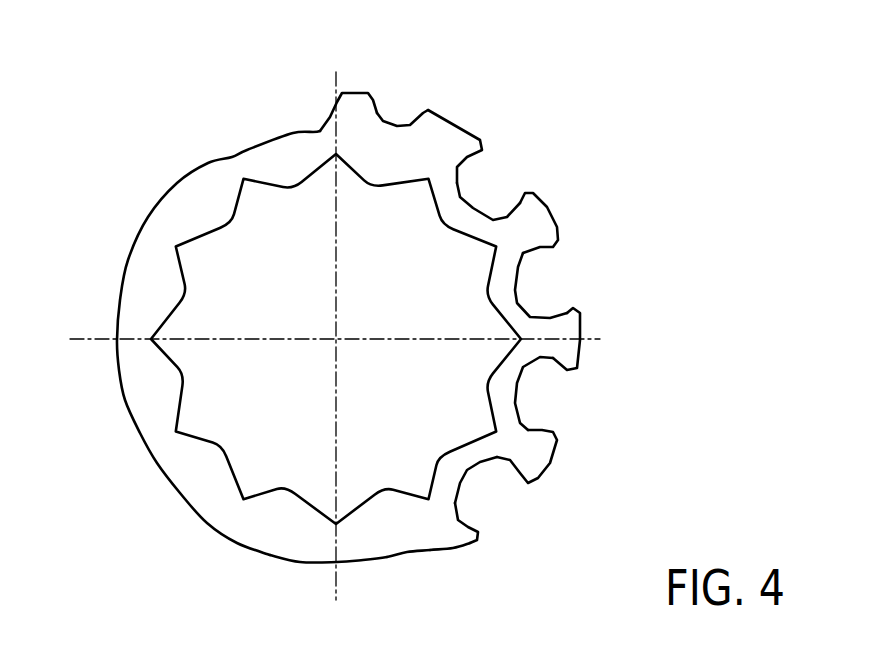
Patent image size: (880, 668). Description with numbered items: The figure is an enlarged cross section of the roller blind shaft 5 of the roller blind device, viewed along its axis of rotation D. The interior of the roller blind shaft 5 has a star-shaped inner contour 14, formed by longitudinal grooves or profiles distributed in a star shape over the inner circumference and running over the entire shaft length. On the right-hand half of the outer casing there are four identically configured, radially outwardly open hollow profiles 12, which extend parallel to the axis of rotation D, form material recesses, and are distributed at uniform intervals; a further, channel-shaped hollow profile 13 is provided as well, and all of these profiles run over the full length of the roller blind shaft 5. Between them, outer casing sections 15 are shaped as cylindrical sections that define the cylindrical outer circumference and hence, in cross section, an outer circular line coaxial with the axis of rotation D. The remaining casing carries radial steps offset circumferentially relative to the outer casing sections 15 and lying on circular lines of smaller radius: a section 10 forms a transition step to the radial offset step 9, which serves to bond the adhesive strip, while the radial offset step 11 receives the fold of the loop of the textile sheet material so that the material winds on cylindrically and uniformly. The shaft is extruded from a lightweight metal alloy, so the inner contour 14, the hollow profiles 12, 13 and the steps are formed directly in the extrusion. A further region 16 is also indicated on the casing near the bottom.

The roller blind shaft 5 is at (200, 150).
The radial offset step 9 is at (297, 563).
The transition step 10 is at (407, 554).
The radial offset step 11 is at (252, 146).
The hollow profiles 12 is at (488, 182).
The channel-shaped hollow profile 13 is at (398, 103).
The star-shaped inner contour 14 is at (180, 302).
The outer casing sections 15 is at (460, 126).
The transition region 16 is at (448, 553).
The axis of rotation D is at (337, 337).